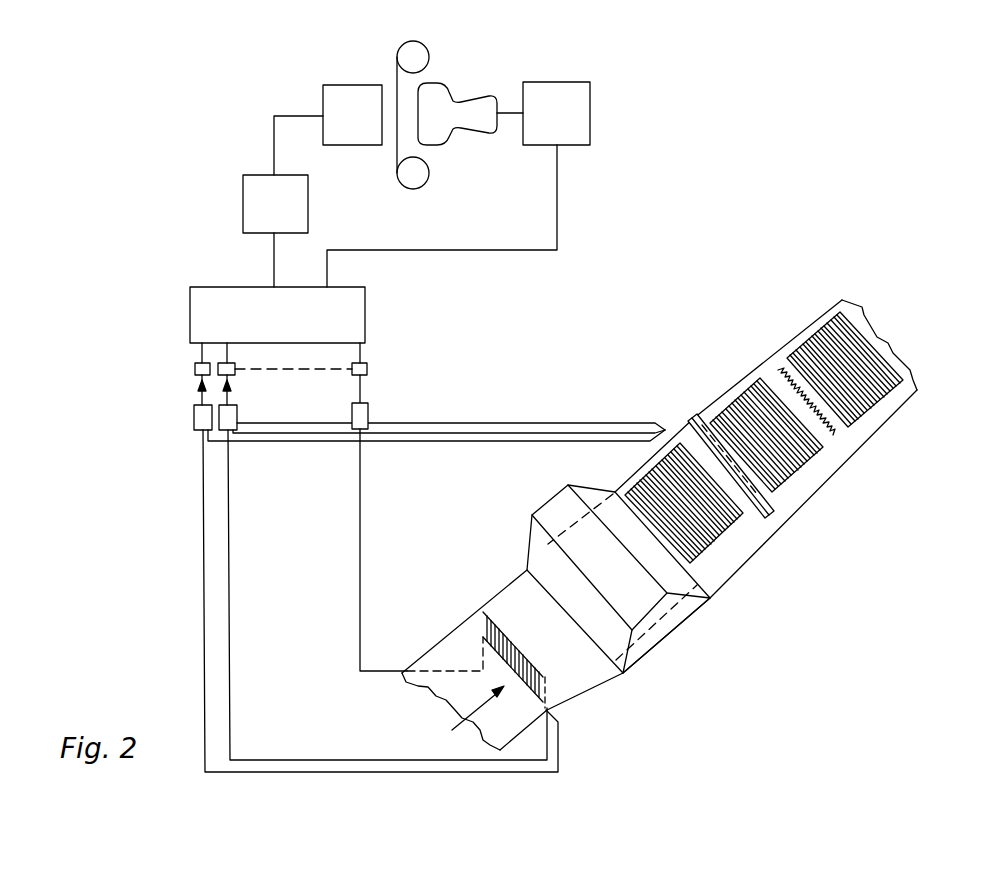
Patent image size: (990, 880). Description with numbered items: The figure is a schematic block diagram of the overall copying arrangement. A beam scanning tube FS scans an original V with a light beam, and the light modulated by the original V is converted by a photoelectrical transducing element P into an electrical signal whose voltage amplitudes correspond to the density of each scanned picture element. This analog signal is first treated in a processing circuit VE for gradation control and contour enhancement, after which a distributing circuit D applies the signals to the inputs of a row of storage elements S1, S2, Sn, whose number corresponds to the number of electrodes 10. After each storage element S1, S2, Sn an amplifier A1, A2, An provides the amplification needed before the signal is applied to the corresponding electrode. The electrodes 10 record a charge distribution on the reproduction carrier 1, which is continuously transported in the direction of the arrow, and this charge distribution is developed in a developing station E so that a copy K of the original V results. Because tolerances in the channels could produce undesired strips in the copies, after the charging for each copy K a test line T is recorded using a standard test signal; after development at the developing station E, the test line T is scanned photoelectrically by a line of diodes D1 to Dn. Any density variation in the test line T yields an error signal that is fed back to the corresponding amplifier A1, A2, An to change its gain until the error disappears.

The photoelectrical transducing element P is at (357, 100).
The original V is at (397, 80).
The beam scanning tube FS is at (467, 105).
The developing station E is at (673, 622).
The processing circuit VE is at (275, 231).
The distributing circuit D is at (277, 315).
The storage element S1 is at (194, 368).
The storage element S2 is at (235, 367).
The storage element Sn is at (368, 367).
The amplifier A1 is at (194, 417).
The amplifier A2 is at (237, 413).
The amplifier An is at (368, 417).
The diode Dn is at (694, 422).
The diode D1 is at (763, 520).
The test line T is at (782, 370).
The copy K is at (883, 400).
The reproduction carrier 1 is at (858, 445).
The electrodes 10 is at (562, 671).